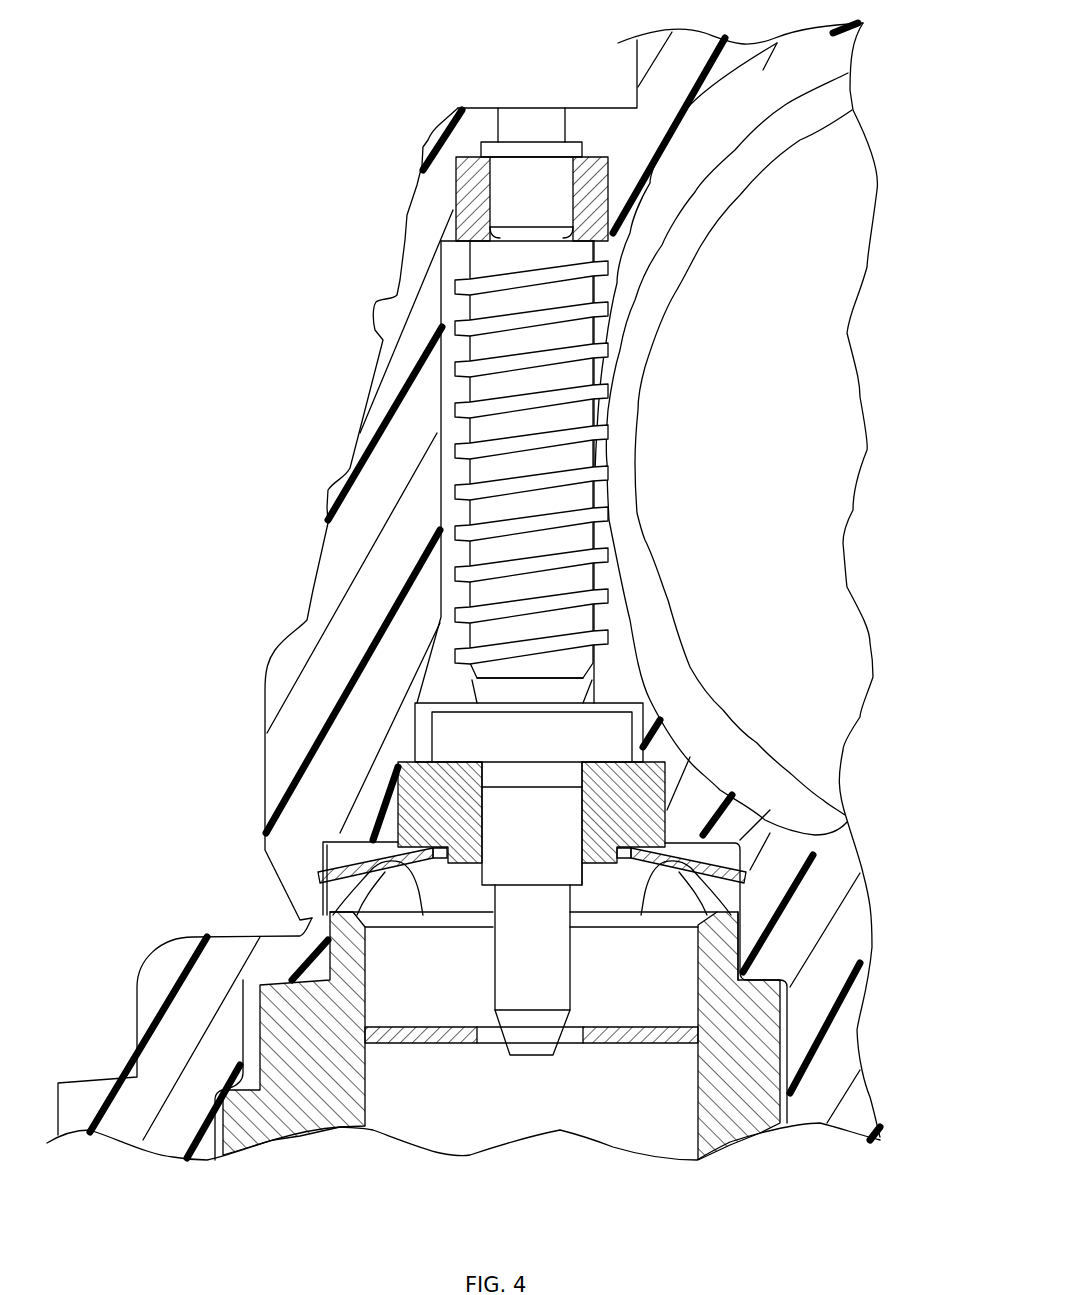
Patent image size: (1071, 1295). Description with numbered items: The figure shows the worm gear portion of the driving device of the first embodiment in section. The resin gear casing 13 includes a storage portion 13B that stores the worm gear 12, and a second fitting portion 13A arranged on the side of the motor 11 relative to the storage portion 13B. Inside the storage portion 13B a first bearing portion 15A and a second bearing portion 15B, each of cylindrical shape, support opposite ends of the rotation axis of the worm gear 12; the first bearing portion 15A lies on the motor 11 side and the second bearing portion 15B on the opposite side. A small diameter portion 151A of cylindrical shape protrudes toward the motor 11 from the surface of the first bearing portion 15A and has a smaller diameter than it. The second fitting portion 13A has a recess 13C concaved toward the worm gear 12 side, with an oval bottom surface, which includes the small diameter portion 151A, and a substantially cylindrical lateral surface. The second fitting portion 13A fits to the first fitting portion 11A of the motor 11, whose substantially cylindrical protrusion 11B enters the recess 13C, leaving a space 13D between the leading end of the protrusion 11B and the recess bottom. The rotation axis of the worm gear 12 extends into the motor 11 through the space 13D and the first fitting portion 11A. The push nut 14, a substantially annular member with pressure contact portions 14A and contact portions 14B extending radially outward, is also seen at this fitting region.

The electric motor 11 is at (785, 1045).
The first fitting portion 11A is at (330, 953).
The protrusion 11B is at (733, 942).
The worm gear 12 is at (460, 318).
The gear casing 13 is at (368, 366).
The second fitting portion 13A is at (323, 845).
The storage portion 13B is at (452, 430).
The recess 13C is at (730, 902).
The space 13D is at (596, 875).
The push nut 14 is at (348, 848).
The pressure contact portion 14A is at (323, 875).
The contact portion 14B is at (348, 884).
The first bearing portion 15A is at (397, 782).
The second bearing portion 15B is at (472, 187).
The small diameter portion 151A is at (457, 866).